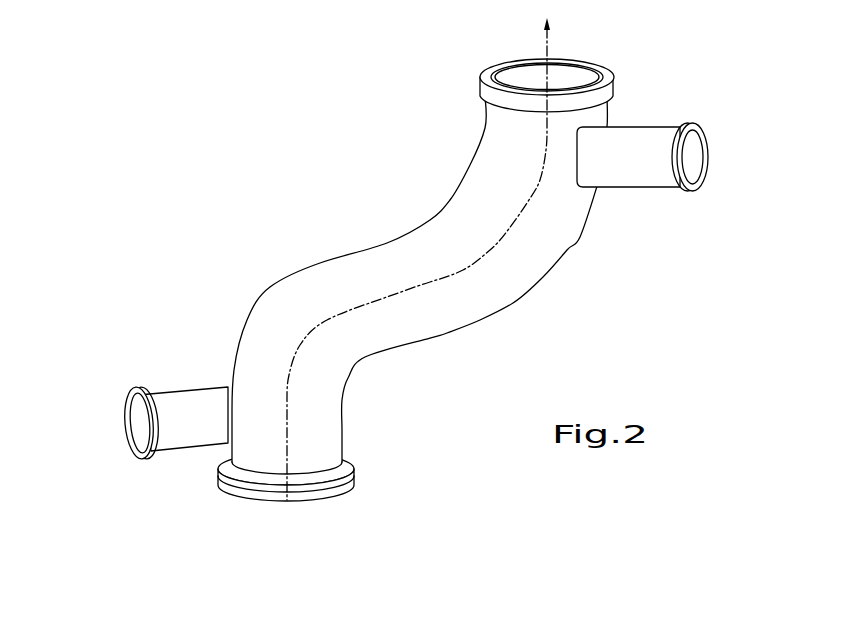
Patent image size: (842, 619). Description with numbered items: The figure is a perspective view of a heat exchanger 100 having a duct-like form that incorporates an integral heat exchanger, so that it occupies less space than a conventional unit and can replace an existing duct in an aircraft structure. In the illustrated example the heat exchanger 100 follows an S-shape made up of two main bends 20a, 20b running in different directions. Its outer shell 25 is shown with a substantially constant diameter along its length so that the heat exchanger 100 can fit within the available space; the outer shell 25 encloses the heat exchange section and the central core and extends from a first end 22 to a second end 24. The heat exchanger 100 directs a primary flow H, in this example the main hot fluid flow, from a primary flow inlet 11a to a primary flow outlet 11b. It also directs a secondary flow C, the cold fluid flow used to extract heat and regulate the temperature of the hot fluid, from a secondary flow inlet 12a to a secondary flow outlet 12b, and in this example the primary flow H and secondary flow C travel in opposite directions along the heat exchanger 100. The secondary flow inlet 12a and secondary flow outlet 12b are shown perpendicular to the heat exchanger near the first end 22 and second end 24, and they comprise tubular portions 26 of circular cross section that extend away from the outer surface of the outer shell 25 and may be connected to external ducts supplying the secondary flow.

The heat exchanger 100 is at (348, 149).
The primary flow inlet 11a is at (322, 497).
The primary flow outlet 11b is at (583, 62).
The secondary flow inlet 12a is at (720, 165).
The secondary flow outlet 12b is at (132, 452).
The main bend 20a is at (258, 310).
The main bend 20b is at (563, 253).
The first end 22 is at (260, 498).
The second end 24 is at (500, 63).
The outer shell 25 is at (452, 308).
The tubular portions 26 is at (632, 127).
The secondary flow C is at (718, 157).
The primary flow H is at (288, 525).